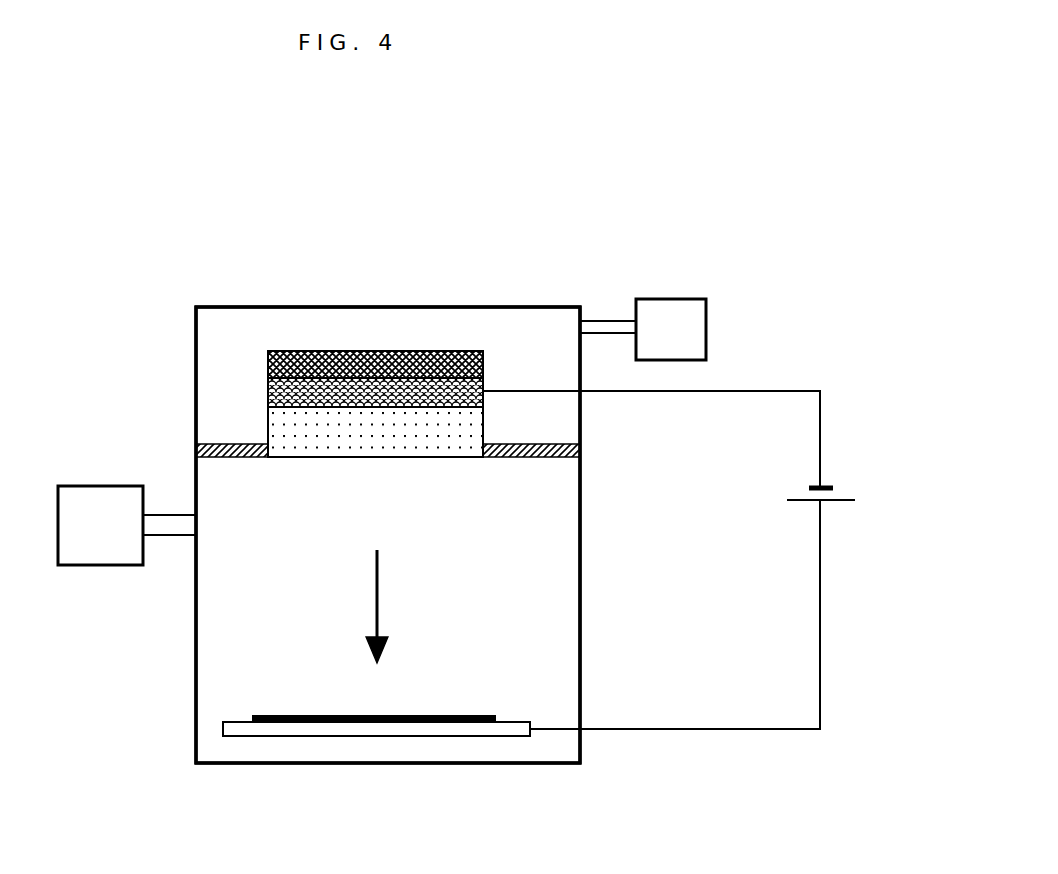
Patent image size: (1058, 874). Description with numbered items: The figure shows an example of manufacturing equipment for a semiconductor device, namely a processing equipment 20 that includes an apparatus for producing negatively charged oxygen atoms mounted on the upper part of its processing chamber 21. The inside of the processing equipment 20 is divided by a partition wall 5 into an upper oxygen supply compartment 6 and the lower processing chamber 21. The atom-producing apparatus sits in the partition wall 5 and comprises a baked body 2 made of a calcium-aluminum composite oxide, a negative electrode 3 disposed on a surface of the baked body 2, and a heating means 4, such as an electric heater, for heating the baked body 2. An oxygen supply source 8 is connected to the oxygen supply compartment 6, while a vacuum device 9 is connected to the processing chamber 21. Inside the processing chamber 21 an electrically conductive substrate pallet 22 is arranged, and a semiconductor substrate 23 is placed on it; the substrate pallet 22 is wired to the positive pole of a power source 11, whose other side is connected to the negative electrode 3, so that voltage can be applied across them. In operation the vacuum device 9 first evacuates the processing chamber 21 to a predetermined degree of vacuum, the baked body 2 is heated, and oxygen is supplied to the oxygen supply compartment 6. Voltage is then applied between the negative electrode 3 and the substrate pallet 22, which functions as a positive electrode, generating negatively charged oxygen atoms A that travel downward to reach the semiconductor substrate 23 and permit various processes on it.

The processing equipment 20 is at (100, 145).
The processing chamber 21 is at (215, 650).
The oxygen supply compartment 6 is at (348, 322).
The partition wall 5 is at (200, 450).
The baked body 2 is at (283, 422).
The negative electrode 3 is at (268, 385).
The heating means 4 is at (268, 351).
The oxygen supply source 8 is at (643, 329).
The vacuum device 9 is at (127, 525).
The power source 11 is at (858, 504).
The negatively charged oxygen atoms A is at (387, 607).
The substrate pallet 22 is at (497, 730).
The semiconductor substrate 23 is at (482, 713).